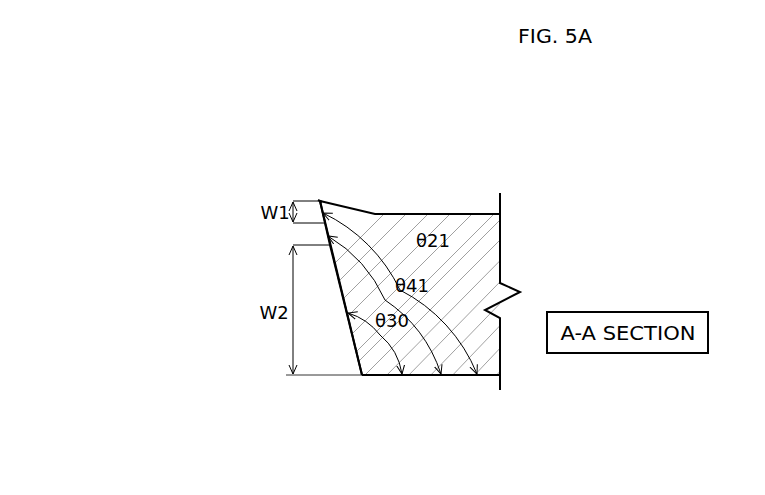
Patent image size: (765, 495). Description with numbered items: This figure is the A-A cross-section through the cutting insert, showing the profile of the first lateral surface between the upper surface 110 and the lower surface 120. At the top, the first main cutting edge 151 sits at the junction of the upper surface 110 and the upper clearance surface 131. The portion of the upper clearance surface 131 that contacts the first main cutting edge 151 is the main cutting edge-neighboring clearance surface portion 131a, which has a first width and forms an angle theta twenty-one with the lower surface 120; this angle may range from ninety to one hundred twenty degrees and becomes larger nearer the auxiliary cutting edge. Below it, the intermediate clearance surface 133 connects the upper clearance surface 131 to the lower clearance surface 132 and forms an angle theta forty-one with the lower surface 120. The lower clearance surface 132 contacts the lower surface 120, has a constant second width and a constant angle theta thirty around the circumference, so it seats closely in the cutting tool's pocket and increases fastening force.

The upper surface 110 is at (416, 213).
The lower surface 120 is at (461, 377).
The upper clearance surface 131 is at (341, 288).
The main cutting edge-neighboring clearance surface portion 131a is at (320, 211).
The intermediate clearance surface 133 is at (323, 236).
The lower clearance surface 132 is at (350, 327).
The first main cutting edge 151 is at (320, 200).